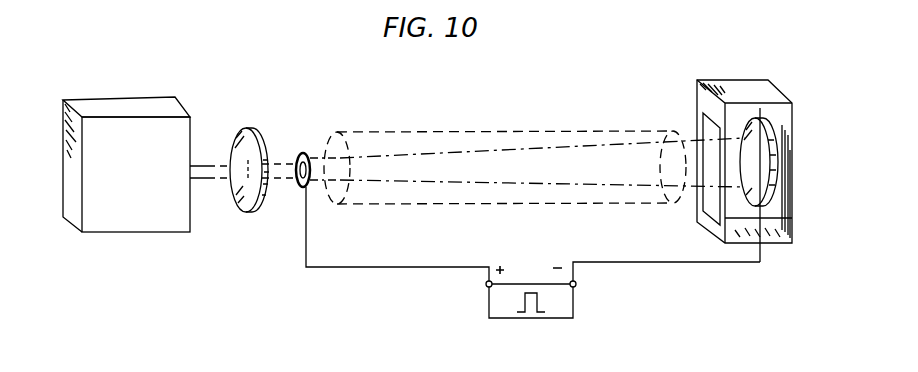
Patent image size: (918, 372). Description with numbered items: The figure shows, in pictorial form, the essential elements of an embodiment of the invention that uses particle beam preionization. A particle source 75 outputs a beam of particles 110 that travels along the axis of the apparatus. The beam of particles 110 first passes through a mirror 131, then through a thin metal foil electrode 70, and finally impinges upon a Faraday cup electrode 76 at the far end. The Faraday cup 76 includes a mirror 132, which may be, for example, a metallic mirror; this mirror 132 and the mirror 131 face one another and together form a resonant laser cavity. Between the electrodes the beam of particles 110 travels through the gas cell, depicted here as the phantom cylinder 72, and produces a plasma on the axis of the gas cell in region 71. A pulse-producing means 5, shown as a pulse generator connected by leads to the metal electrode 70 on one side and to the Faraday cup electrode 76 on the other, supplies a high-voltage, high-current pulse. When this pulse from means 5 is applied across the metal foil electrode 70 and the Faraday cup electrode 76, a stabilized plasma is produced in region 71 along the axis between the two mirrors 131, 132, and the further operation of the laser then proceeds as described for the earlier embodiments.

The particle source 75 is at (136, 100).
The beam of particles 110 is at (208, 165).
The mirror 131 is at (255, 128).
The metal foil electrode 70 is at (305, 153).
The drift tube (phantom) 72 is at (378, 132).
The region 71 is at (593, 160).
The Faraday cup electrode 76 is at (738, 88).
The mirror 132 is at (772, 133).
The means for producing a high-voltage, high-current pulse 5 is at (489, 305).